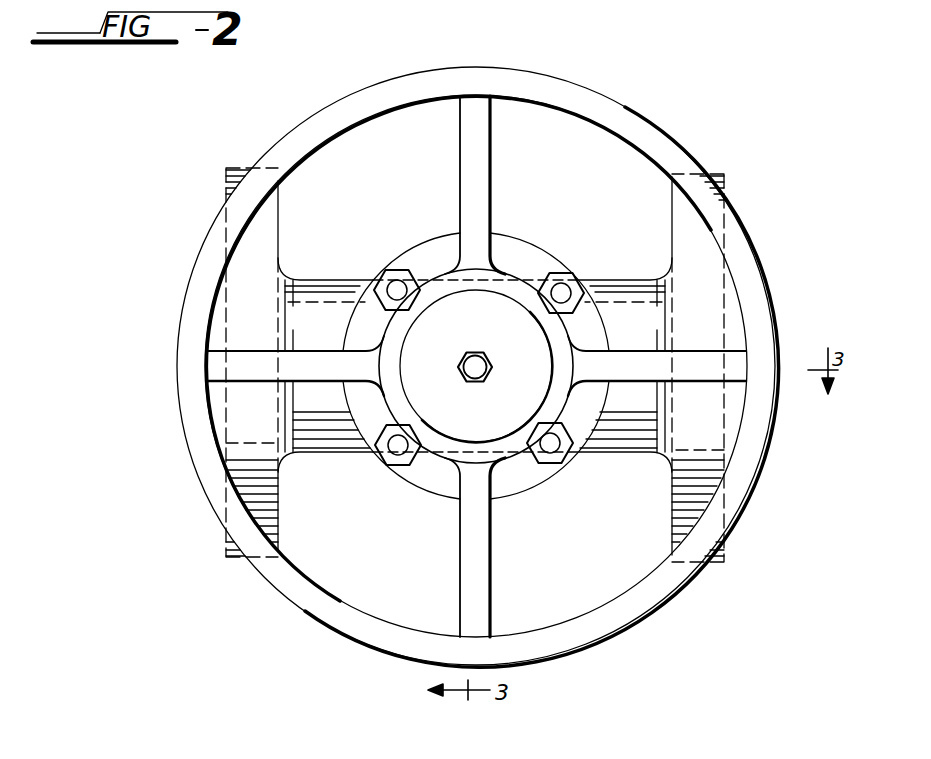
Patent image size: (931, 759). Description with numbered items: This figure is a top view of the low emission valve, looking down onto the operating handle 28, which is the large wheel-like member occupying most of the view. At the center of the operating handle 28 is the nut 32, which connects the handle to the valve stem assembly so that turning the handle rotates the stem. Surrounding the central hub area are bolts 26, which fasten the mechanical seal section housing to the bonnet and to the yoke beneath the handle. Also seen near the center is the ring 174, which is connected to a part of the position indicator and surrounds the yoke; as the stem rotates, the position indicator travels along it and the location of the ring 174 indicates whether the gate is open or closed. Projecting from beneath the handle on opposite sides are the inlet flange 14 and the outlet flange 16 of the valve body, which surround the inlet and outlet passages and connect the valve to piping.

The inlet flange 14 is at (723, 186).
The outlet flange 16 is at (226, 183).
The bolts 26 is at (398, 265).
The operating handle 28 is at (683, 171).
The nut 32 is at (492, 366).
The ring 174 is at (538, 252).